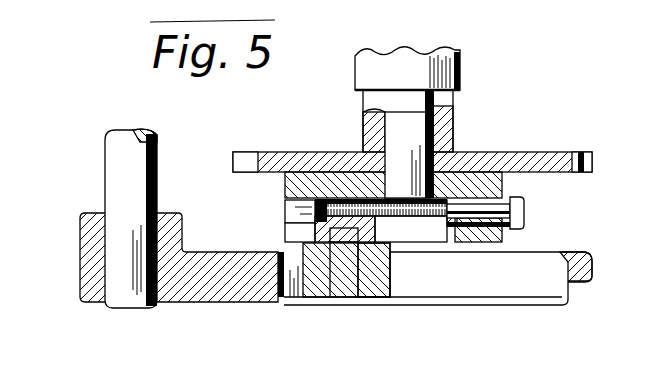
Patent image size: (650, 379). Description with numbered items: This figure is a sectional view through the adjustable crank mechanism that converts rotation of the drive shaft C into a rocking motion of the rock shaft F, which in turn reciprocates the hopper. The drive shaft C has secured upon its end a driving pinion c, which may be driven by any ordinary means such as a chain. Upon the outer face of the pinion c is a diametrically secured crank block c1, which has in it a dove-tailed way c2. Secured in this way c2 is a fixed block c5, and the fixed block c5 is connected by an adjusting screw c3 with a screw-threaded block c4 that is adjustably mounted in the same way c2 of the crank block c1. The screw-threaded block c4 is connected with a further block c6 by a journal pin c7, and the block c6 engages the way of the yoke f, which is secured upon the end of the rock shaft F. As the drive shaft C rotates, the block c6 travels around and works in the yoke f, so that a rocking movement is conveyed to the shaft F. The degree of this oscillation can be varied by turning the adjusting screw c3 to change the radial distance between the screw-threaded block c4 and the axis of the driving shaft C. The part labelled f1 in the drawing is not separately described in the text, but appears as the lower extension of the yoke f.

The rock shaft F is at (118, 170).
The yoke f is at (213, 298).
The base channel extension f1 is at (483, 297).
The drive shaft C is at (407, 135).
The driving pinion c is at (550, 158).
The crank block c1 is at (494, 183).
The dove-tailed way c2 is at (316, 212).
The adjusting screw c3 is at (525, 211).
The screw threaded block c4 is at (314, 232).
The fixed block c5 is at (504, 241).
The block c6 is at (378, 297).
The journal pin c7 is at (328, 283).